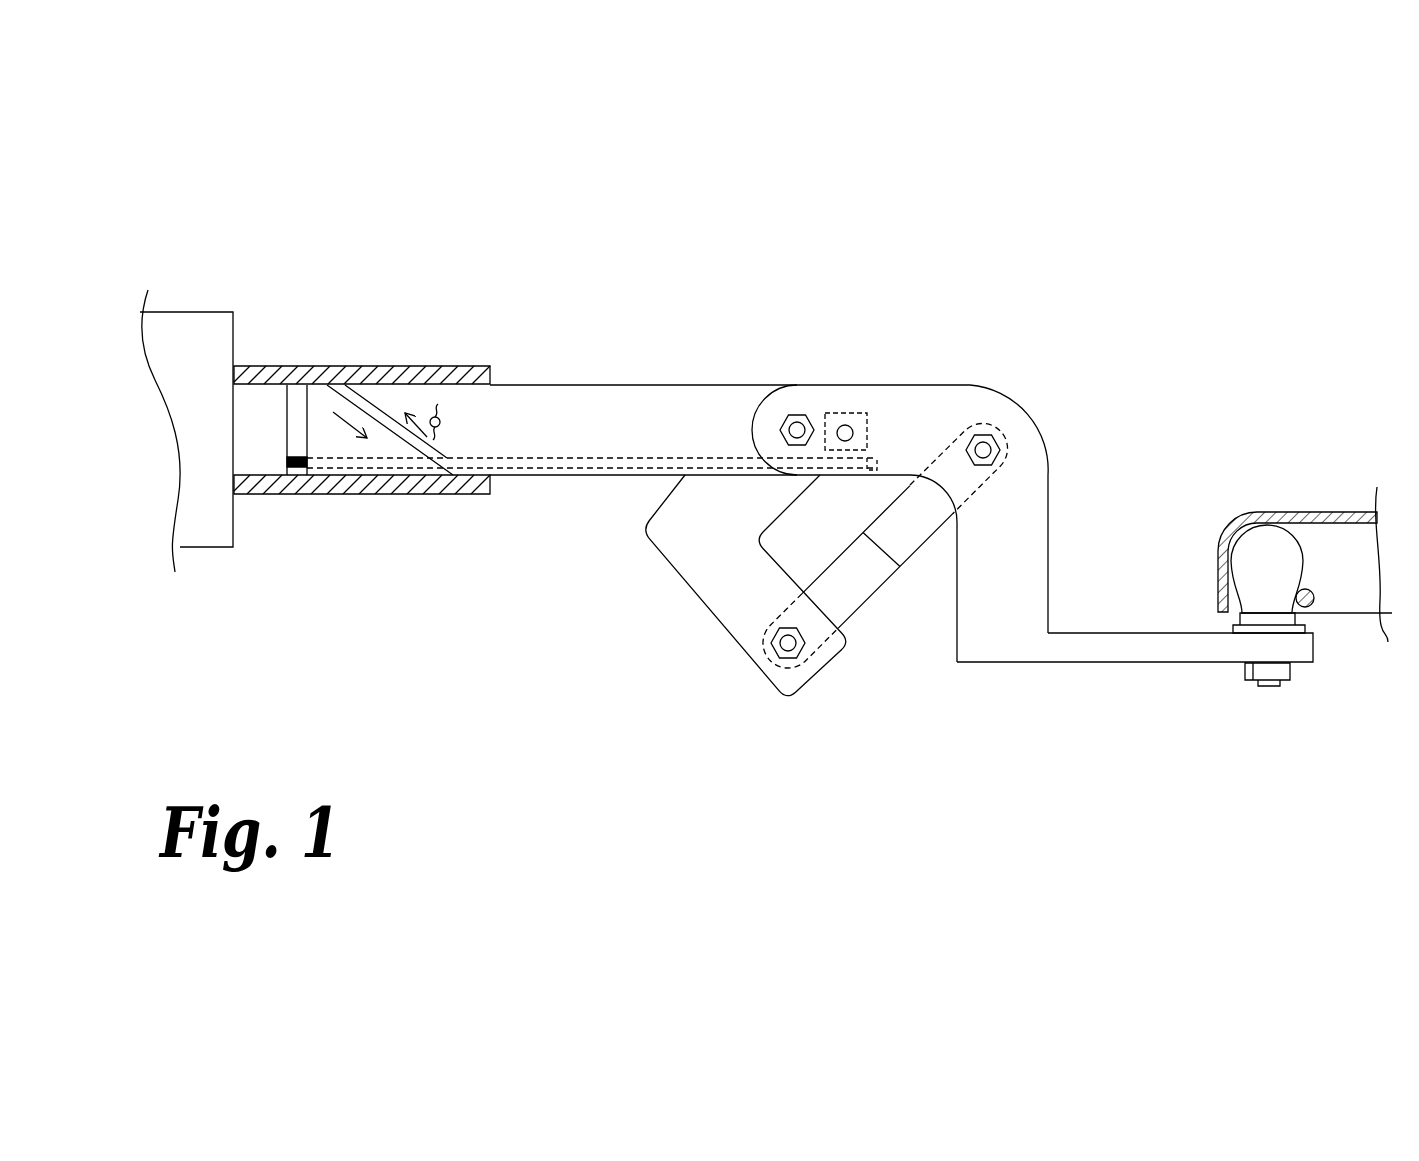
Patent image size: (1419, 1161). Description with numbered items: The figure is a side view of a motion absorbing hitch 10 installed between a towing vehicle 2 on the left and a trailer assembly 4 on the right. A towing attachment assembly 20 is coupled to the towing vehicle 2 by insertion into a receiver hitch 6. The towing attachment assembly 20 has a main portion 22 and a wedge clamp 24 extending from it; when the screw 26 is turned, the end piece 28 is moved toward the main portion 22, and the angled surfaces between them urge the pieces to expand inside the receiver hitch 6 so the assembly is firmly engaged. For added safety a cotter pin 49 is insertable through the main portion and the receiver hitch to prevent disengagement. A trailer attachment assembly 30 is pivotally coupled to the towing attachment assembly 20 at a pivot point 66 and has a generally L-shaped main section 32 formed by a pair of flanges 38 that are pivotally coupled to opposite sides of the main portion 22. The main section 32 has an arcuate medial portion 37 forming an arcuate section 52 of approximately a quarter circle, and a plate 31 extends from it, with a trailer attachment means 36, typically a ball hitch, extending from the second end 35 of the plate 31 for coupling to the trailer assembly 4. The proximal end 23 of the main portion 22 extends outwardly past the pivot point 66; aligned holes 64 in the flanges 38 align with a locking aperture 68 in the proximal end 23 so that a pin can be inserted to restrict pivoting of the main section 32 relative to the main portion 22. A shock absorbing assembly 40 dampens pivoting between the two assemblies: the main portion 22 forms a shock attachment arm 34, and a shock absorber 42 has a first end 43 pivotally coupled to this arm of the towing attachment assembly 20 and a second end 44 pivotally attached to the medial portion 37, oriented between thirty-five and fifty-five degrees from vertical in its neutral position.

The towing vehicle 2 is at (188, 330).
The trailer assembly 4 is at (1358, 495).
The receiver hitch 6 is at (260, 448).
The motion absorbing hitch 10 is at (1127, 217).
The towing attachment assembly 20 is at (543, 367).
The main portion 22 is at (425, 407).
The proximal end 23 is at (688, 385).
The wedge clamp 24 is at (380, 507).
The screw 26 is at (735, 460).
The end piece 28 is at (325, 407).
The trailer attachment assembly 30 is at (1187, 470).
The plate 31 is at (1142, 648).
The generally L-shaped main section 32 is at (1058, 470).
The shock attachment arm 34 is at (677, 553).
The second end 35 is at (1253, 648).
The trailer attachment means 36 is at (1267, 573).
The arcuate medial portion 37 is at (1017, 430).
The flanges 38 is at (890, 402).
The shock absorbing assembly 40 is at (885, 640).
The shock absorber 42 is at (915, 535).
The first end 43 is at (820, 633).
The second end 44 is at (970, 427).
The cotter pin 49 is at (440, 415).
The arcuate section 52 is at (928, 428).
The aligned holes 64 is at (828, 425).
The pivot point 66 is at (800, 437).
The locking aperture 68 is at (858, 413).